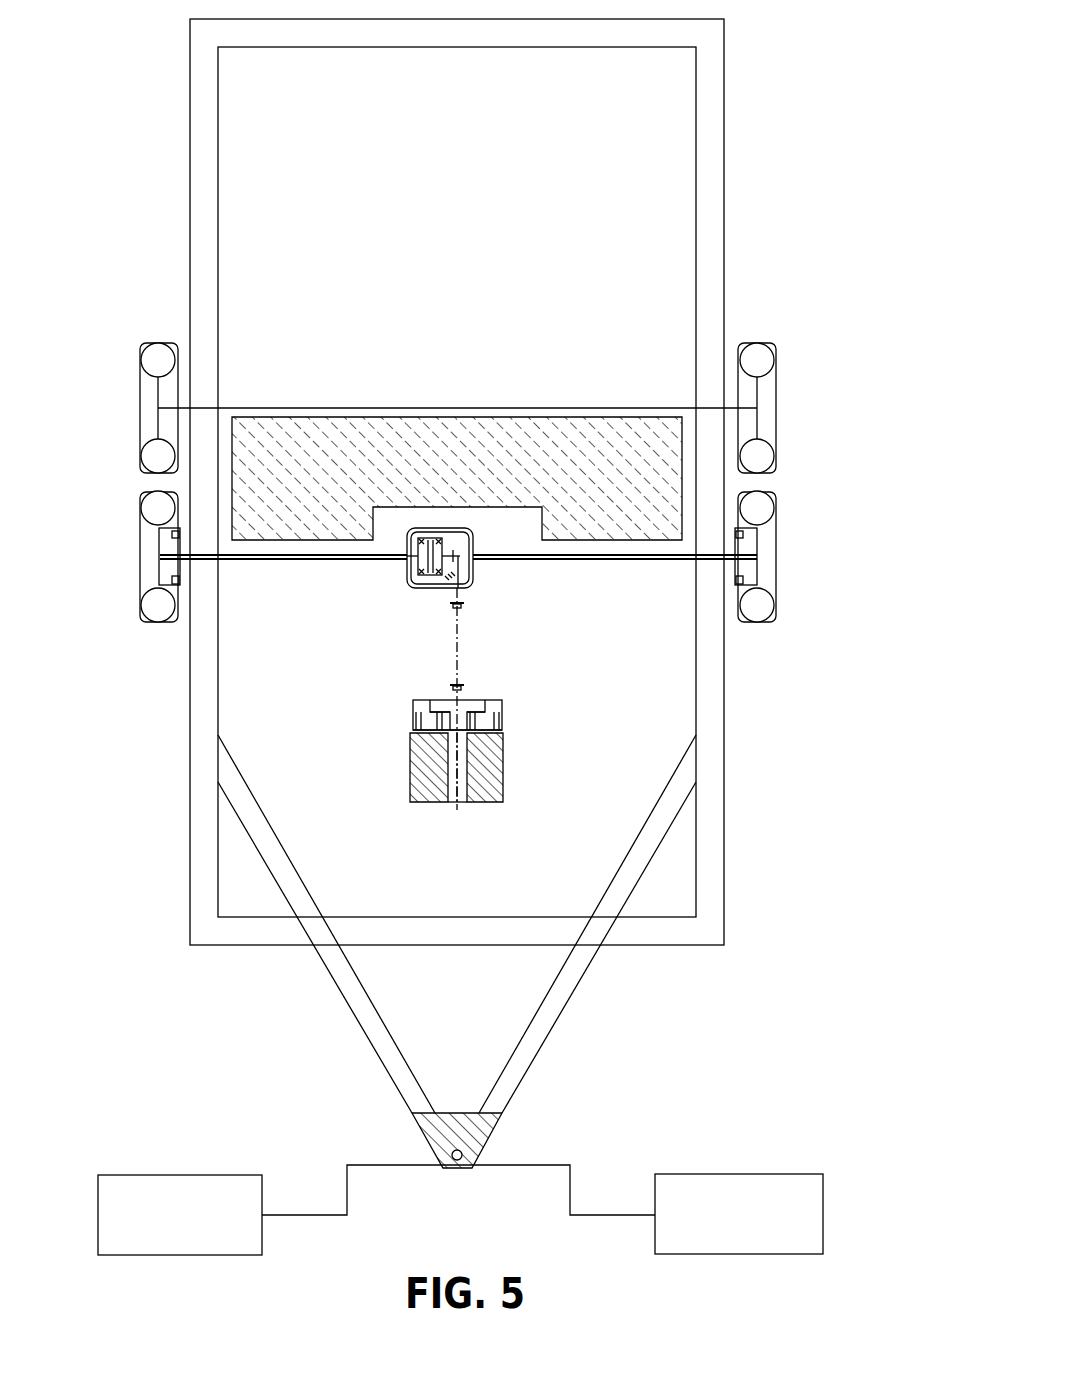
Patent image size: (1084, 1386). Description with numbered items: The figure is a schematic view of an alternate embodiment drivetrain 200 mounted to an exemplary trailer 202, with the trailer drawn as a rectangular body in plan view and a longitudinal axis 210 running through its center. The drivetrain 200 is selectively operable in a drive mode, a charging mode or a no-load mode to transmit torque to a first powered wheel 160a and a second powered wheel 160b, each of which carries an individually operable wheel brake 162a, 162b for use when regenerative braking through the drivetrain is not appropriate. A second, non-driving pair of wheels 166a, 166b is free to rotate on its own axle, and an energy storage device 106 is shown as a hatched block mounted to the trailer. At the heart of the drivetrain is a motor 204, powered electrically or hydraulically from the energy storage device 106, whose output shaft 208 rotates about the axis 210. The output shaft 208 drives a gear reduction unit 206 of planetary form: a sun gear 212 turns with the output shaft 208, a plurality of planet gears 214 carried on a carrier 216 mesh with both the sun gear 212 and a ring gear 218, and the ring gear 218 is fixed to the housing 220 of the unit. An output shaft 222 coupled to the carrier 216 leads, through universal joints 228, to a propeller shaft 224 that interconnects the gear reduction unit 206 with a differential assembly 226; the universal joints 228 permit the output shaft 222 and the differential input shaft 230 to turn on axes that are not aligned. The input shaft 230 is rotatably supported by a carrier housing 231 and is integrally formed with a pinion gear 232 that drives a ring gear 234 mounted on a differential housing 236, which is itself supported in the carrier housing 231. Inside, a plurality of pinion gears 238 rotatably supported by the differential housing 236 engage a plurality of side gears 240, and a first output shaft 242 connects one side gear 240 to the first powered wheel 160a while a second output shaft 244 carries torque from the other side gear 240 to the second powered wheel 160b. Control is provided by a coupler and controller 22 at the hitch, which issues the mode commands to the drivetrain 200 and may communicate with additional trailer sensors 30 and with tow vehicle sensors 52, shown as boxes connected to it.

The trailer 202 is at (744, 96).
The coupler and controller 22 is at (462, 1152).
The trailer sensors 30 is at (114, 1178).
The vehicle sensors 52 is at (742, 1178).
The energy storage device 106 is at (300, 430).
The wheel 166a is at (158, 350).
The wheel 166b is at (757, 352).
The first powered wheel 160a is at (155, 505).
The second powered wheel 160b is at (768, 500).
The wheel brake 162a is at (172, 584).
The wheel brake 162b is at (745, 588).
The first output shaft 242 is at (255, 561).
The second output shaft 244 is at (637, 561).
The differential assembly 226 is at (403, 567).
The side gears 240 is at (407, 548).
The pinion gears 238 is at (421, 538).
The differential housing 236 is at (428, 537).
The ring gear 234 is at (447, 537).
The carrier housing 231 is at (466, 533).
The pinion gear 232 is at (460, 583).
The input shaft 230 is at (462, 594).
The propeller shaft 224 is at (466, 603).
The universal joints 228 is at (457, 690).
The drivetrain 200 is at (454, 732).
The gear reduction unit 206 is at (507, 710).
The output shaft 222 is at (453, 698).
The carrier 216 is at (430, 708).
The sun gear 212 is at (470, 717).
The planet gears 214 is at (496, 717).
The housing 220 is at (413, 708).
The ring gear 218 is at (413, 720).
The motor 204 is at (507, 775).
The output shaft 208 is at (462, 748).
The axis 210 is at (458, 787).